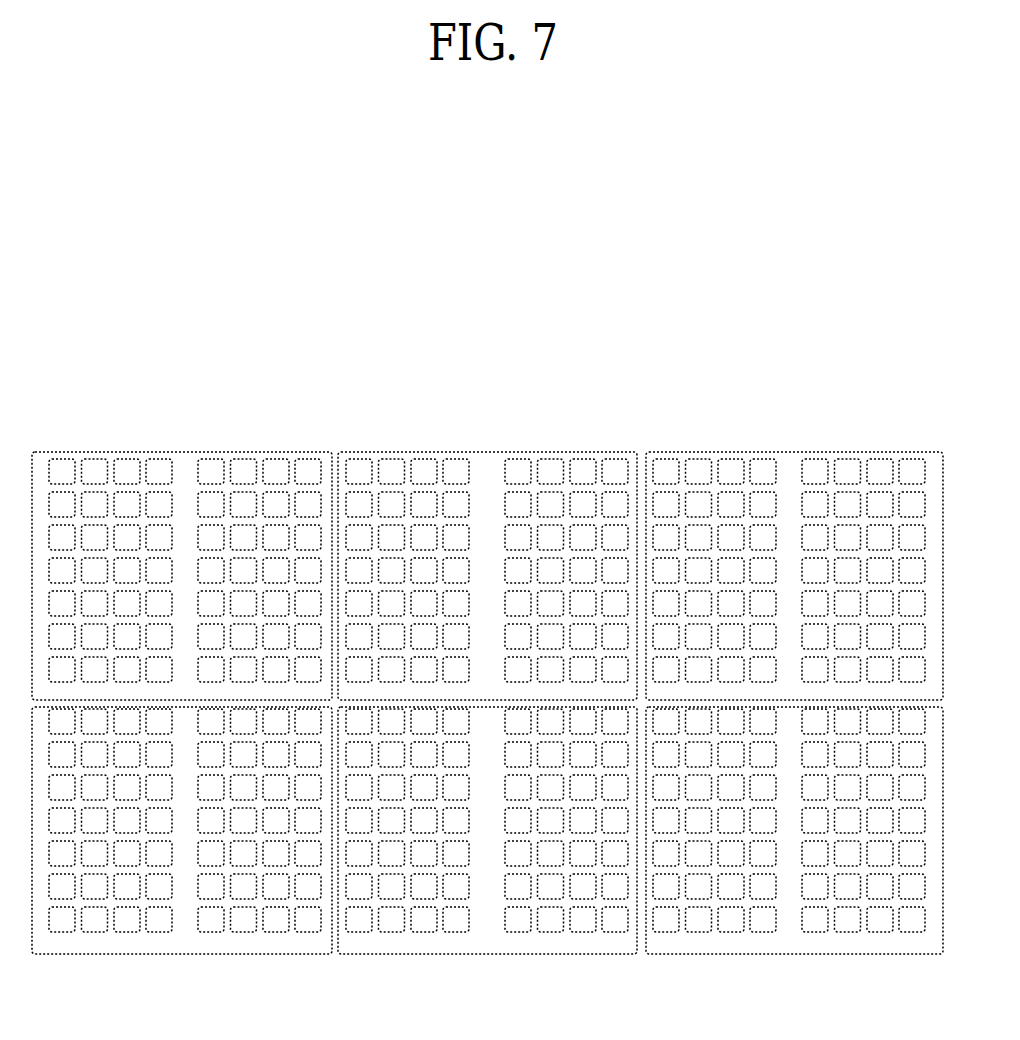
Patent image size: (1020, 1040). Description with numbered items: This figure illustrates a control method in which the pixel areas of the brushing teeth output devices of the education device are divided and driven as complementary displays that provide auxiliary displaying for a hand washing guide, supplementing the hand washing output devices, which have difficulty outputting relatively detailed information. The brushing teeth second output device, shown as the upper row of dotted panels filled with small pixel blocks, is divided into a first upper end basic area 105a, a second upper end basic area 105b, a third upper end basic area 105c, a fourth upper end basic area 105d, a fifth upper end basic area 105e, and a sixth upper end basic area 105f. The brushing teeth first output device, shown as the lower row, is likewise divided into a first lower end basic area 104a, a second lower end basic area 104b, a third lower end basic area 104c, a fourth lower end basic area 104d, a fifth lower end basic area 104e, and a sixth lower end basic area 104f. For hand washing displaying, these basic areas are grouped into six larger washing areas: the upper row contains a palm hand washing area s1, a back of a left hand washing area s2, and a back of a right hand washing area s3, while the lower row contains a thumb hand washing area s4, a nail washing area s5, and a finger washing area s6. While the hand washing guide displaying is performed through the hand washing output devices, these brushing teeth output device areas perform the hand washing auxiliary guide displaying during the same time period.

The palm hand washing area s1 is at (157, 452).
The back of a left hand washing area s2 is at (482, 452).
The back of a right hand washing area s3 is at (792, 452).
The thumb hand washing area s4 is at (165, 954).
The nail washing area s5 is at (493, 955).
The finger washing area s6 is at (803, 955).
The first upper end basic area 105a is at (110, 555).
The second upper end basic area 105b is at (259, 555).
The third upper end basic area 105c is at (407, 555).
The fourth upper end basic area 105d is at (566, 555).
The fifth upper end basic area 105e is at (714, 555).
The sixth upper end basic area 105f is at (863, 555).
The first lower end basic area 104a is at (110, 848).
The second lower end basic area 104b is at (259, 848).
The third lower end basic area 104c is at (407, 848).
The fourth lower end basic area 104d is at (566, 848).
The fifth lower end basic area 104e is at (714, 848).
The sixth lower end basic area 104f is at (863, 848).